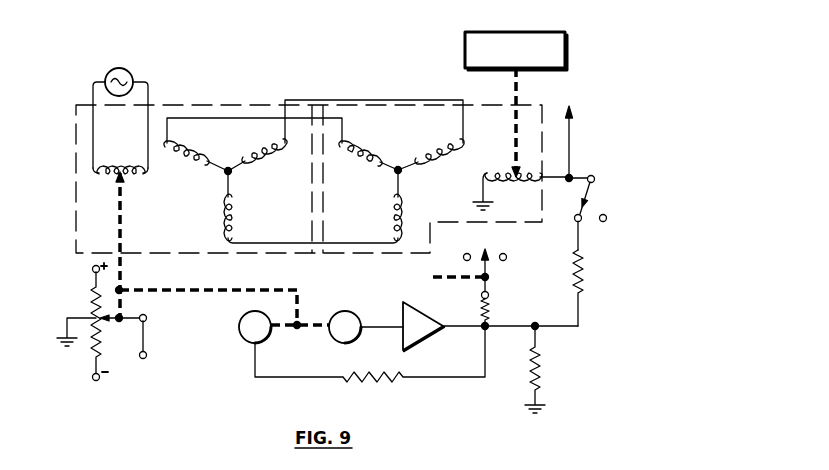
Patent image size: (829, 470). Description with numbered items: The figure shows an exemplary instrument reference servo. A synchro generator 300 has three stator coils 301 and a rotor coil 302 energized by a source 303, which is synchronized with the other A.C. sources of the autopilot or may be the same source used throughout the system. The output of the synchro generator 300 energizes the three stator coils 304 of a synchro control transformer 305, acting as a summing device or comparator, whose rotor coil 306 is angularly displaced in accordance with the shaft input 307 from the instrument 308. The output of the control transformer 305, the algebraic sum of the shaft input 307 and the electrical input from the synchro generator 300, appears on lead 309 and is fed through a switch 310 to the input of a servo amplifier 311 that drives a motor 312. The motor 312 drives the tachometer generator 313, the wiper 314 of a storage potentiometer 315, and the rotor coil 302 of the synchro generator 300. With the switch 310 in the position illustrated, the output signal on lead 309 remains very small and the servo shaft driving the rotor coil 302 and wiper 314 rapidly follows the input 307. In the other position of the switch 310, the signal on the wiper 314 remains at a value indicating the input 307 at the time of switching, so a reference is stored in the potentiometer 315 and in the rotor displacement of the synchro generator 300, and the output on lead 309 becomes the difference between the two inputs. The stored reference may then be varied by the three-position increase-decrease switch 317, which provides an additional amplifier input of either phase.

The synchro generator 300 is at (86, 237).
The stator coils 301 is at (216, 175).
The rotor coil 302 is at (120, 166).
The source 303 is at (132, 75).
The stator coils 304 is at (399, 157).
The synchro control transformer 305 is at (407, 254).
The rotor coil 306 is at (518, 183).
The shaft input 307 is at (518, 98).
The instrument 308 is at (557, 55).
The lead 309 is at (572, 143).
The switch 310 is at (590, 194).
The servo amplifier 311 is at (438, 313).
The motor 312 is at (353, 322).
The tachometer generator 313 is at (243, 338).
The wiper 314 is at (132, 317).
The storage potentiometer 315 is at (95, 315).
The three-position increase-decrease switch 317 is at (490, 278).